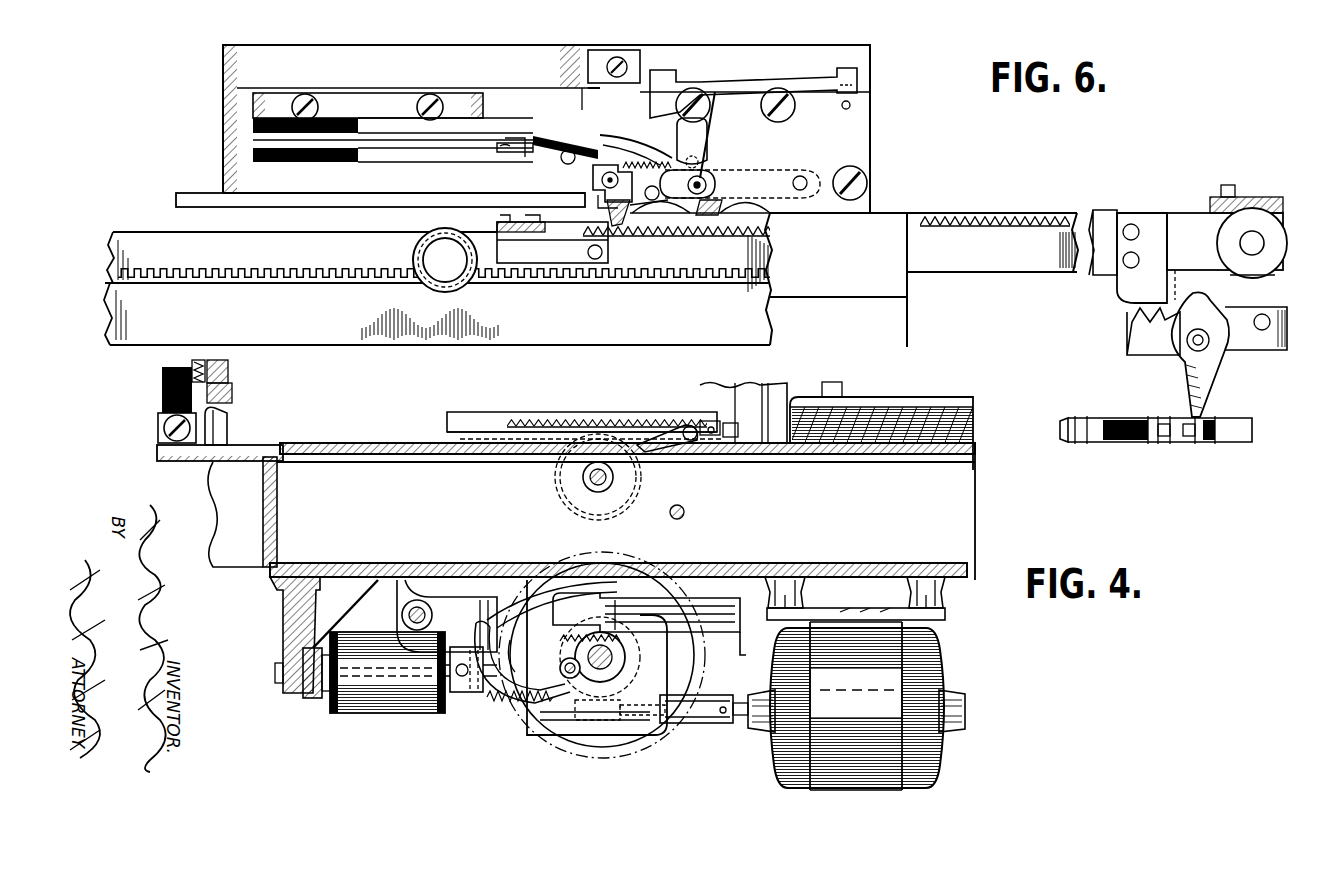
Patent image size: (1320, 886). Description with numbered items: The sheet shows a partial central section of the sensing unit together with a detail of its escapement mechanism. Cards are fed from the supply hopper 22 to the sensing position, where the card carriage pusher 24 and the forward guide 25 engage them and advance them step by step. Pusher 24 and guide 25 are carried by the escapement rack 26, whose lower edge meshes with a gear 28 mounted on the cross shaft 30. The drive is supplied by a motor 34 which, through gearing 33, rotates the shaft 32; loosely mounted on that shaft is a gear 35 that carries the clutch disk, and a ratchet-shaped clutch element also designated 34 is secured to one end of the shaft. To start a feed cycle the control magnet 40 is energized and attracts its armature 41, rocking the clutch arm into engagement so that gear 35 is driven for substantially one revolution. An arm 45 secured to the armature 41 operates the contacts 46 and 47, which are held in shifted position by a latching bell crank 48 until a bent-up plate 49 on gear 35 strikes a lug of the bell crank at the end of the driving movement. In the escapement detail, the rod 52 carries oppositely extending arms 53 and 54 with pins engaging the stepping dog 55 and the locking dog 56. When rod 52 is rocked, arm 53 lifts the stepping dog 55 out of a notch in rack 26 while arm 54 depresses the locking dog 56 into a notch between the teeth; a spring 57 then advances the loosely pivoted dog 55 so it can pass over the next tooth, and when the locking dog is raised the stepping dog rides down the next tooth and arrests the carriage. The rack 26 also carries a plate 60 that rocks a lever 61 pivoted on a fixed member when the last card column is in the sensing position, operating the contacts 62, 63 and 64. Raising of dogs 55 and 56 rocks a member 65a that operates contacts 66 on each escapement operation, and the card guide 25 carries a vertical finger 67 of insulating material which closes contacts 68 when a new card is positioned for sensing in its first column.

In FIG. 4, the supply hopper 22 is at (908, 397).
In FIG. 4, the card carriage pusher 24 is at (660, 452).
In FIG. 4, the forward guide 25 is at (212, 442).
In FIG. 6, the escapement rack 26 is at (688, 245).
In FIG. 4, the escapement rack 26 is at (700, 440).
In FIG. 4, the gear 28 is at (628, 492).
In FIG. 4, the cross shaft 30 is at (598, 490).
In FIG. 4, the shaft 32 is at (600, 668).
In FIG. 4, the gearing 33 is at (603, 722).
In FIG. 4, the motor 34 is at (793, 748).
In FIG. 4, the gear 35 is at (650, 745).
In FIG. 4, the control magnet 40 is at (372, 682).
In FIG. 4, the armature 41 is at (457, 695).
In FIG. 4, the arm 45 is at (458, 600).
In FIG. 4, the contacts 46 is at (620, 580).
In FIG. 4, the contacts 47 is at (615, 631).
In FIG. 4, the latching bell crank 48 is at (530, 720).
In FIG. 4, the bent-up plate 49 is at (505, 712).
In FIG. 6, the rod 52 is at (702, 182).
In FIG. 6, the arm 53 is at (592, 178).
In FIG. 6, the arm 54 is at (735, 186).
In FIG. 6, the stepping dog 55 is at (626, 203).
In FIG. 6, the locking dog 56 is at (740, 202).
In FIG. 6, the spring 57 is at (663, 160).
In FIG. 6, the plate 60 is at (1130, 290).
In FIG. 6, the lever 61 is at (1229, 354).
In FIG. 6, the contacts 62 is at (1097, 442).
In FIG. 6, the contacts 63 is at (1165, 442).
In FIG. 6, the contacts 64 is at (1195, 442).
In FIG. 6, the member 65a is at (612, 143).
In FIG. 6, the contacts 66 is at (505, 148).
In FIG. 4, the vertical finger 67 is at (160, 393).
In FIG. 4, the contacts 68 is at (232, 395).